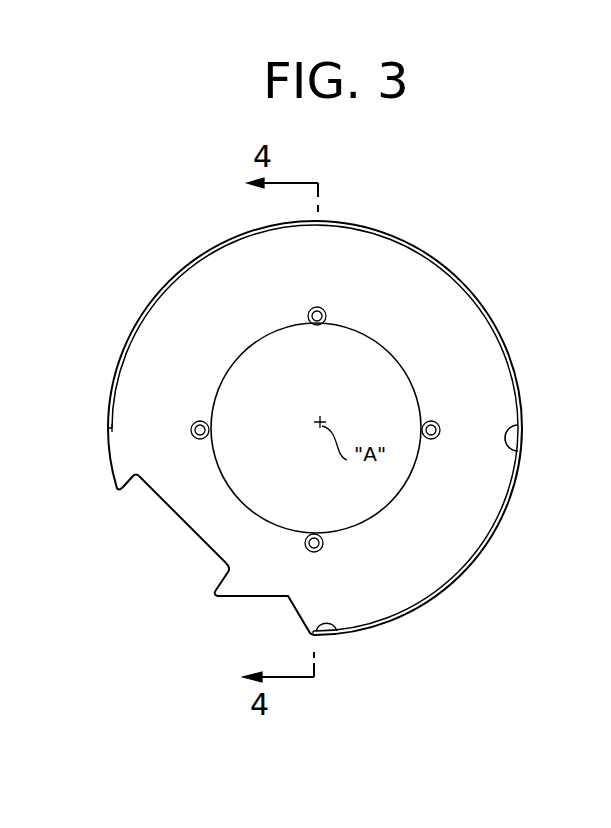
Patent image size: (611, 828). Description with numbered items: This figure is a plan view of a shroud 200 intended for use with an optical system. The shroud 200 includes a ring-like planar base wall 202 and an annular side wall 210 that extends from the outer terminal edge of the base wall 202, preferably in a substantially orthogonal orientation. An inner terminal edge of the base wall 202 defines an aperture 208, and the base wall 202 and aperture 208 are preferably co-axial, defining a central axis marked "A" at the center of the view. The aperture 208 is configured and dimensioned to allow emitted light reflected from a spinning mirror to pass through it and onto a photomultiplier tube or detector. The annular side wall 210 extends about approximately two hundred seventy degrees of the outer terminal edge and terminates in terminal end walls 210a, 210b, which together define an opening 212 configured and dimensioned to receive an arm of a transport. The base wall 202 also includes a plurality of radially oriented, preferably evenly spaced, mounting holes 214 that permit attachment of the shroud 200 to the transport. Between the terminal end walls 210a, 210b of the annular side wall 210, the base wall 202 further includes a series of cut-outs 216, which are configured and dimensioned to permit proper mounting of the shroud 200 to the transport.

The shroud 200 is at (422, 185).
The base wall 202 is at (482, 363).
The aperture 208 is at (390, 391).
The annular side wall 210 is at (513, 451).
The terminal end wall 210a is at (105, 438).
The terminal end wall 210b is at (332, 618).
The opening 212 is at (150, 548).
The mounting holes 214 is at (434, 438).
The cut-outs 216 is at (213, 555).